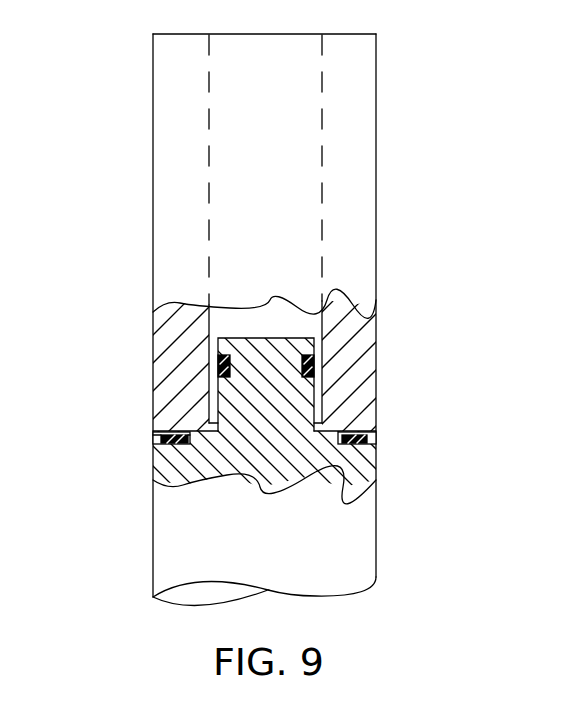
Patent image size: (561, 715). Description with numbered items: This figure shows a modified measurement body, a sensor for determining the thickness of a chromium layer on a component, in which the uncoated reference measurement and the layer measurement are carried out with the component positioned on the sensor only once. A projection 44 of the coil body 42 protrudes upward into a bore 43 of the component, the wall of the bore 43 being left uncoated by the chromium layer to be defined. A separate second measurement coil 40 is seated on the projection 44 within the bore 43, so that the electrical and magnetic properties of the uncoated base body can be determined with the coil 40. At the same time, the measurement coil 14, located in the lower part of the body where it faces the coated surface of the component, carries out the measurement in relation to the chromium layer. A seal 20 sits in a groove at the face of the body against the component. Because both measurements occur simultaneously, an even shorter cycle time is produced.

The measurement coil 14 is at (165, 455).
The seal 20 is at (180, 437).
The second measurement coil 40 is at (312, 362).
The coil body 42 is at (345, 531).
The bore 43 is at (312, 318).
The projection 44 is at (287, 407).